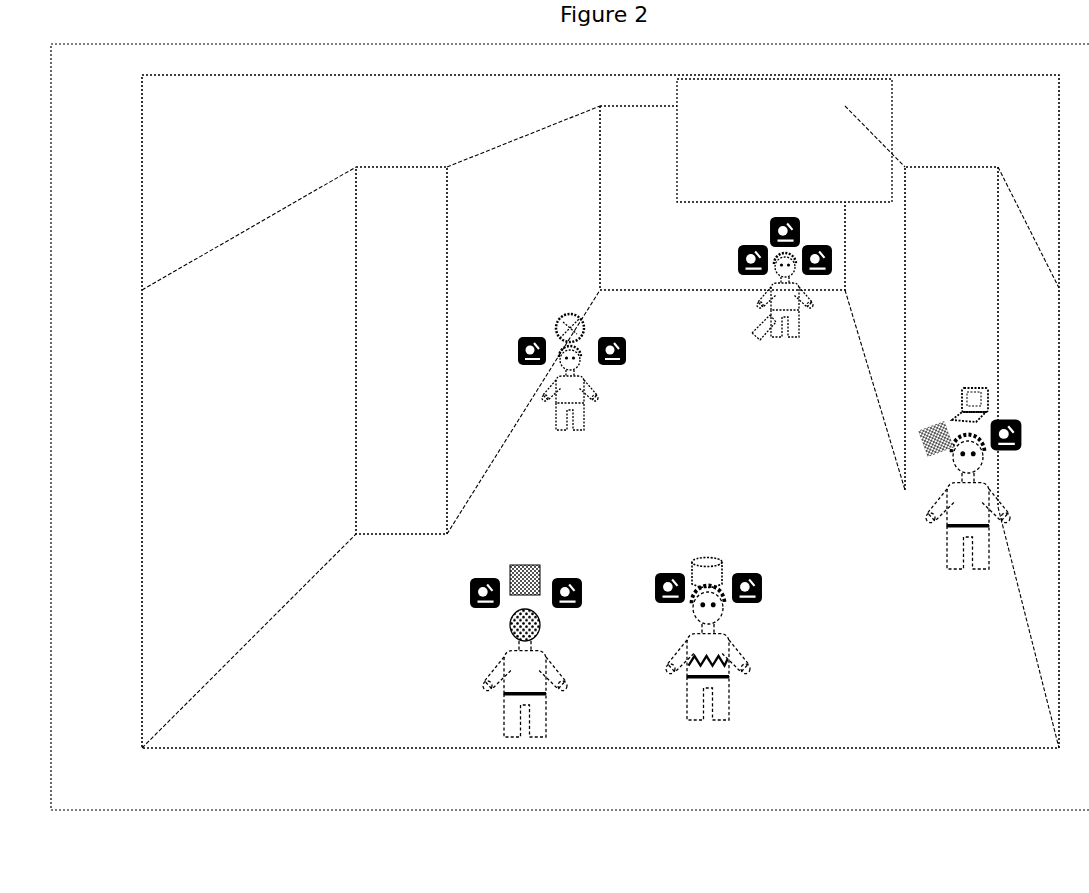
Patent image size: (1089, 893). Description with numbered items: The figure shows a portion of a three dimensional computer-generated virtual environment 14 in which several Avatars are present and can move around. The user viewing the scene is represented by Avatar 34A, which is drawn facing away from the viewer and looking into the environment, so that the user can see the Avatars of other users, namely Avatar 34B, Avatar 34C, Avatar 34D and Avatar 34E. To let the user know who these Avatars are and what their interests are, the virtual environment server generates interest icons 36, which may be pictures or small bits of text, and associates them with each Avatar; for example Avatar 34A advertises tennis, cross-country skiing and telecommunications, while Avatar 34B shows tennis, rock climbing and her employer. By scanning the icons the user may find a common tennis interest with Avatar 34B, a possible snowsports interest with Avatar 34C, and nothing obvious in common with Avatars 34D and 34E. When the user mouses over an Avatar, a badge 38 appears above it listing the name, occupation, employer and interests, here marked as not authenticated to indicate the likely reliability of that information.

The virtual environment 14 is at (215, 116).
The badge 38 is at (887, 89).
The interest icons 36 is at (533, 333).
The Avatar 34A is at (496, 662).
The Avatar 34B is at (602, 383).
The Avatar 34C is at (746, 297).
The Avatar 34D is at (932, 490).
The Avatar 34E is at (755, 656).